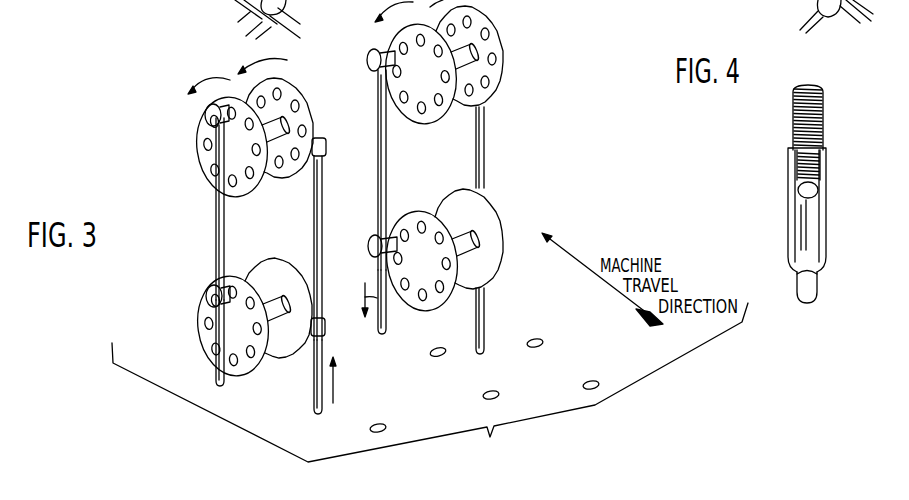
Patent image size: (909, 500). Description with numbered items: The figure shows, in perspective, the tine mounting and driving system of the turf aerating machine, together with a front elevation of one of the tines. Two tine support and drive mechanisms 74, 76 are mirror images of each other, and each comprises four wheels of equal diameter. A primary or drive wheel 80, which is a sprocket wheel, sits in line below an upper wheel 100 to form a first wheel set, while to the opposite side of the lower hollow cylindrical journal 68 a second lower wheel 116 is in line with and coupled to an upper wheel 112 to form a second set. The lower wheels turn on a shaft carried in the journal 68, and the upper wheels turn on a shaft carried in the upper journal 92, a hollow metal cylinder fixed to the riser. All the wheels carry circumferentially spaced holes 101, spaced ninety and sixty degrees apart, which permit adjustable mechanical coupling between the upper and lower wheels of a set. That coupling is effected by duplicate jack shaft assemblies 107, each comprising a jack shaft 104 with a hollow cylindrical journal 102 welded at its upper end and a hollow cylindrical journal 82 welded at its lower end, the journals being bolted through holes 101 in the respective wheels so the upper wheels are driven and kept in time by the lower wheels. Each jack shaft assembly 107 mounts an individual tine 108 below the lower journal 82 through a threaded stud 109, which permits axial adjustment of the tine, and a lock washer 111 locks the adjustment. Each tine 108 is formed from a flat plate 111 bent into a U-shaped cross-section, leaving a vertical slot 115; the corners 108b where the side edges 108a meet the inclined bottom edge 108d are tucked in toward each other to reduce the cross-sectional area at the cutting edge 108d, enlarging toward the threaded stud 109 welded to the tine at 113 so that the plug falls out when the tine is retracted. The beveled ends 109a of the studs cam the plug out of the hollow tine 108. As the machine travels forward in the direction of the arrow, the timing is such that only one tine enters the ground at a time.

In FIG. 3, the hollow cylindrical metal journal 68 is at (278, 300).
In FIG. 3, the tine support and drive mechanism 74 is at (311, 82).
In FIG. 3, the tine support and drive mechanism 76 is at (526, 30).
In FIG. 3, the primary or drive wheel 80 is at (395, 223).
In FIG. 3, the hollow cylindrical journal 82 is at (206, 291).
In FIG. 3, the upper journal 92 is at (272, 143).
In FIG. 3, the upper wheel 100 is at (437, 118).
In FIG. 3, the holes 101 is at (304, 138).
In FIG. 3, the hollow cylindrical journal 102 is at (205, 110).
In FIG. 3, the jack shaft 104 is at (225, 246).
In FIG. 3, the jack shaft assembly 107 is at (323, 228).
In FIG. 3, the tine 108 is at (213, 373).
In FIG. 4, the tine 108 is at (783, 228).
In FIG. 4, the side edges 108a is at (789, 205).
In FIG. 4, the corners 108b is at (812, 275).
In FIG. 4, the inclined bottom edge 108d is at (807, 303).
In FIG. 4, the threaded stud 109 is at (823, 106).
In FIG. 4, the stud end 109a is at (799, 189).
In FIG. 4, the flat plate 111 is at (823, 213).
In FIG. 3, the upper wheel 112 is at (507, 68).
In FIG. 4, the weld 113 is at (825, 172).
In FIG. 4, the vertical slot 115 is at (812, 240).
In FIG. 3, the second lower wheel 116 is at (496, 222).